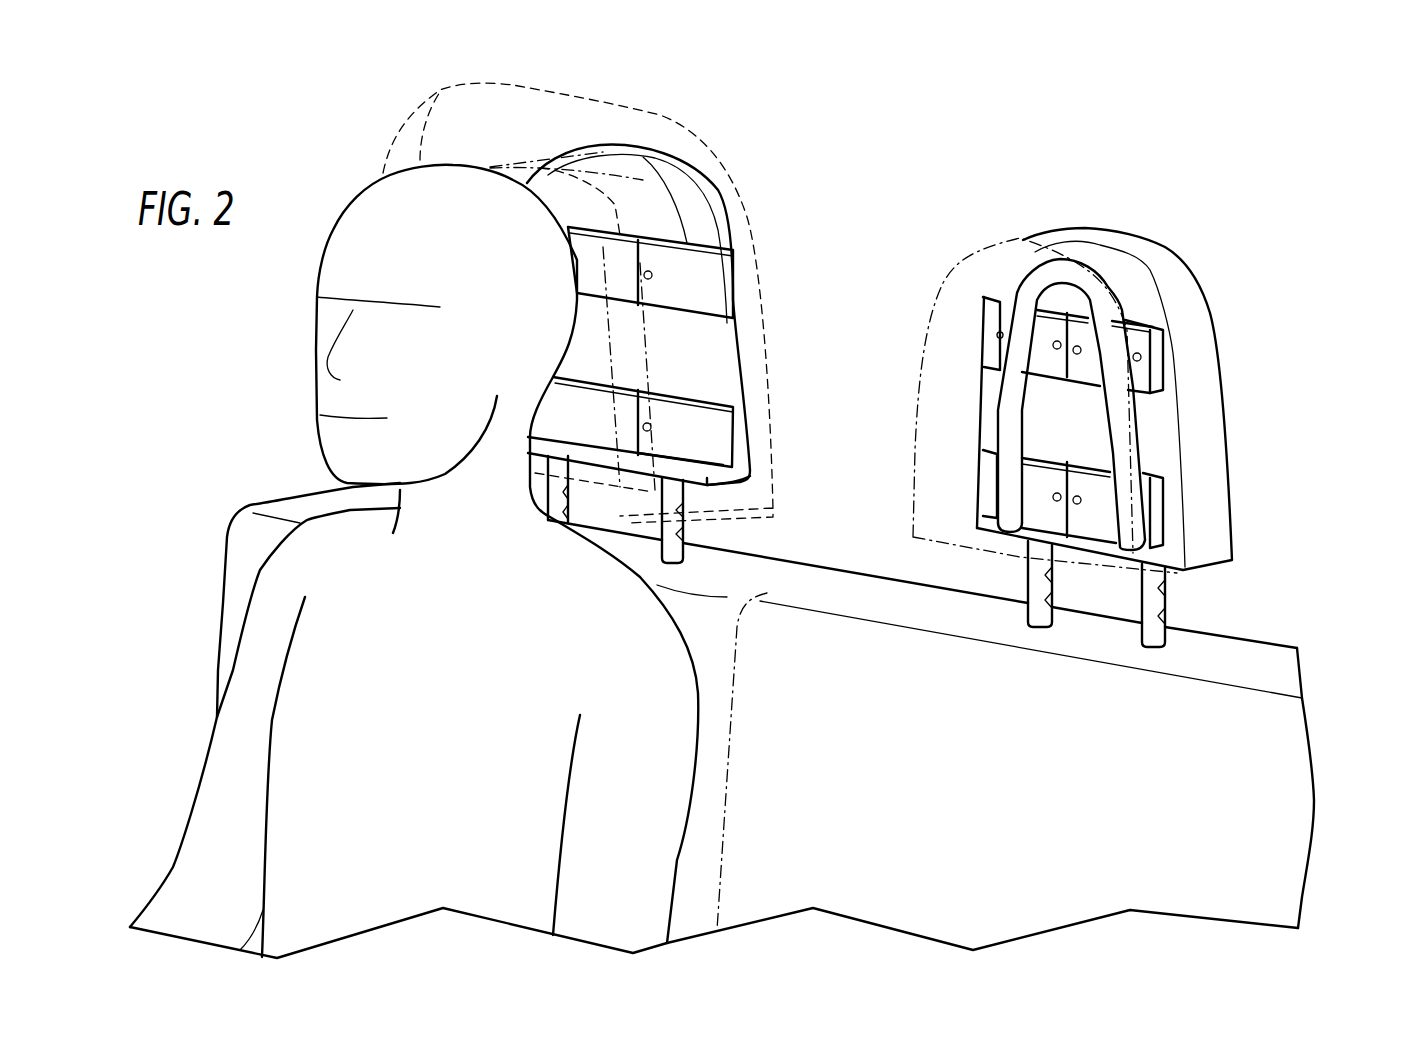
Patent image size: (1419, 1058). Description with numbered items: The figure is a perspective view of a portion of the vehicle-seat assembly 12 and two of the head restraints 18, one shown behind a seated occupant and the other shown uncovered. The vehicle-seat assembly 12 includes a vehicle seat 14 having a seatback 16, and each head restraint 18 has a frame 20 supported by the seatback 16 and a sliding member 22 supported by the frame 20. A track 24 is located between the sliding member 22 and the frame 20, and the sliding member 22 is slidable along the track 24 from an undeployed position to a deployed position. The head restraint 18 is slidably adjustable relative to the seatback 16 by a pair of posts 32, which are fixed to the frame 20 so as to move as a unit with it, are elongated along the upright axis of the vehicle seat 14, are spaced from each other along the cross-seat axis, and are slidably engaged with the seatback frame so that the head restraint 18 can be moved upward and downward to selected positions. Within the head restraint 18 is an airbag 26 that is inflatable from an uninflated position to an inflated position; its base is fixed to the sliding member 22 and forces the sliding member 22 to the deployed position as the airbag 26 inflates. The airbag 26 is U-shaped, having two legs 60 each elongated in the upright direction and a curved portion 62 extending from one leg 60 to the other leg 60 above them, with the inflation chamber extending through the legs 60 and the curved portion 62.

The vehicle-seat assembly 12 is at (769, 739).
The vehicle seat 14 is at (1285, 732).
The seatback 16 is at (1272, 892).
The head restraint 18 is at (781, 112).
The frame 20 is at (703, 173).
The sliding member 22 is at (703, 247).
The track 24 is at (593, 227).
The airbag 26 is at (413, 100).
The posts 32 is at (1023, 613).
The legs 60 is at (760, 280).
The curved portion 62 is at (660, 115).